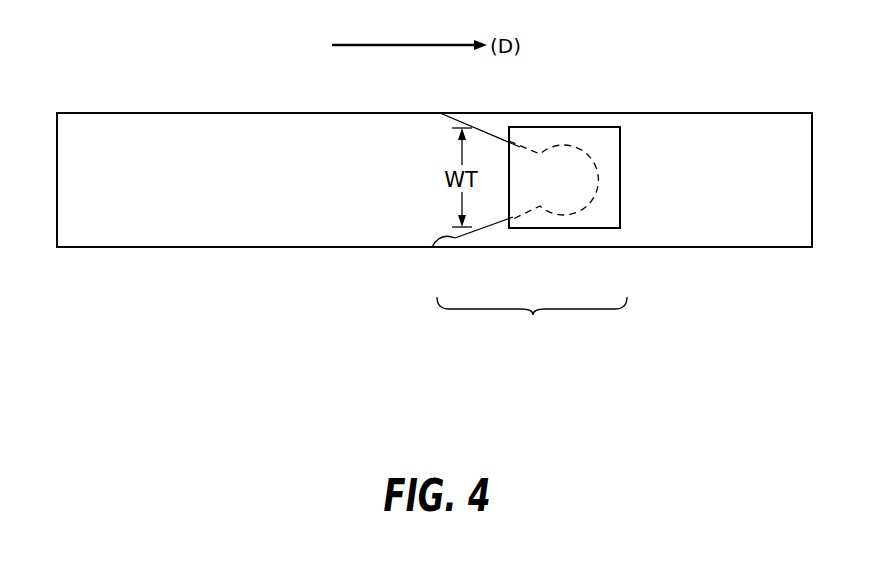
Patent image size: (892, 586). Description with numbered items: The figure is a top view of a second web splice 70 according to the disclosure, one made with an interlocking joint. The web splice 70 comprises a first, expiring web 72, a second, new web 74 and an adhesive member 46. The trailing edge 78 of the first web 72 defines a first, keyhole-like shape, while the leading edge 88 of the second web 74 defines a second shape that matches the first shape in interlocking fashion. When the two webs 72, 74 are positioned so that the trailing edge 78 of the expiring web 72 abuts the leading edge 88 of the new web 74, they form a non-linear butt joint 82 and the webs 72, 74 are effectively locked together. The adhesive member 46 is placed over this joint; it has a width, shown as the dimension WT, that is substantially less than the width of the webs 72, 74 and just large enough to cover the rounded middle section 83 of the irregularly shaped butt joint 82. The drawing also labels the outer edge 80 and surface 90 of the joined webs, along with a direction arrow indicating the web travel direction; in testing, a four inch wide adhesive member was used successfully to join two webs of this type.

The second web splice 70 is at (182, 78).
The first web 72 is at (747, 113).
The second web 74 is at (119, 113).
The second edge 80 is at (740, 247).
The top surface 90 is at (290, 113).
The leading edge 88 is at (487, 133).
The trailing edge 78 is at (432, 247).
The rounded middle section 83 is at (575, 145).
The adhesive member 46 is at (602, 228).
The butt joint 82 is at (532, 321).